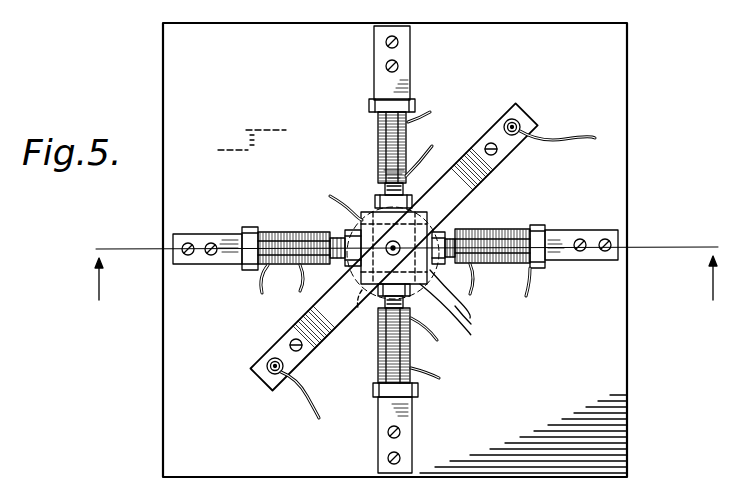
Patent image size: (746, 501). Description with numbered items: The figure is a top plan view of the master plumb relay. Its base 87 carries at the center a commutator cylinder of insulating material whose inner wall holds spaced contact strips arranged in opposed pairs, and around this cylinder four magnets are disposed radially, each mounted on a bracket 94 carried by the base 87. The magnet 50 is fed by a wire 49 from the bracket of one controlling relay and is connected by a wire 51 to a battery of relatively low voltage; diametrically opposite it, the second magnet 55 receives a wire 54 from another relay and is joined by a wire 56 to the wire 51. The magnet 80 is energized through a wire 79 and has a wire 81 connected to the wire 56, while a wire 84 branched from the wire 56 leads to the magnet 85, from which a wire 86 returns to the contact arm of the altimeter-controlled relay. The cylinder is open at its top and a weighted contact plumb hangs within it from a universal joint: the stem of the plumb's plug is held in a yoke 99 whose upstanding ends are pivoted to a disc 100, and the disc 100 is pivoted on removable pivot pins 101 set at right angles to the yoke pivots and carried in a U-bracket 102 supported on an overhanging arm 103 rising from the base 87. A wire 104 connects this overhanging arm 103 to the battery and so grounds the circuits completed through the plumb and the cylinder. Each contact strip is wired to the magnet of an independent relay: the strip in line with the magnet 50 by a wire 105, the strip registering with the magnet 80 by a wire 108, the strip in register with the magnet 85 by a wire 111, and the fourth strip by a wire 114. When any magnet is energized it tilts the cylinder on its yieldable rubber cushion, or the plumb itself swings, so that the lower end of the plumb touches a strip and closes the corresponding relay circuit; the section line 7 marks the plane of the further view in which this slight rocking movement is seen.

The section line 7- 7 is at (404, 266).
The wire 49 is at (438, 139).
The magnet 50 is at (376, 138).
The wire 51 is at (430, 112).
The wire 54 is at (435, 338).
The second magnet 55 is at (377, 368).
The wire 56 is at (438, 372).
The wire 79 is at (534, 293).
The magnet 80 is at (536, 228).
The wire 81 is at (478, 308).
The wire 84 is at (289, 286).
The magnet 85 is at (268, 232).
The wire 86 is at (260, 284).
The base 87 is at (618, 324).
The brackets 94 is at (557, 232).
The yoke 99 is at (380, 212).
The disc 100 is at (469, 326).
The pivot pins 101 is at (303, 232).
The U-bracket 102 is at (357, 231).
The overhanging arm 103 is at (302, 314).
The wire 104 is at (580, 138).
The wire 105 is at (336, 191).
The wire 108 is at (468, 204).
The wire 111 is at (366, 314).
The wire 114 is at (487, 329).